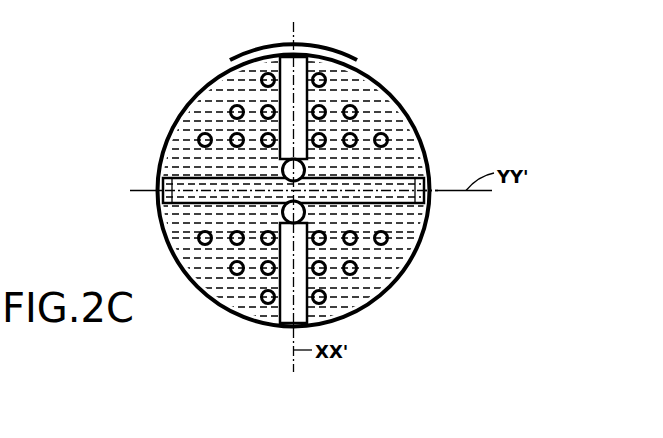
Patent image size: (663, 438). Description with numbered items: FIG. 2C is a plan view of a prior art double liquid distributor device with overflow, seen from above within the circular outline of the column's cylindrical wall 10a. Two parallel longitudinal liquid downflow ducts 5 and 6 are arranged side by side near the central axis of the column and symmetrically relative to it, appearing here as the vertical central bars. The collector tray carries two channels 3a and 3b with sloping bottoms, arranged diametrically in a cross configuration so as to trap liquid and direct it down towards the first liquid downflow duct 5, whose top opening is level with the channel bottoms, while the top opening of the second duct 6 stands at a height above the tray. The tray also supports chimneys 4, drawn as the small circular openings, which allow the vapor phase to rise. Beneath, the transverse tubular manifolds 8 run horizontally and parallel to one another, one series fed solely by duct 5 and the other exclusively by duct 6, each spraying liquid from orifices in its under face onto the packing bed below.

The channel 3a is at (421, 204).
The channel 3b is at (298, 56).
The chimney 4 is at (262, 77).
The first longitudinal liquid downflow duct 5 is at (293, 108).
The second longitudinal liquid downflow duct 6 is at (293, 273).
The transverse tubular manifold 8 is at (204, 104).
The cylindrical wall 10a is at (163, 162).